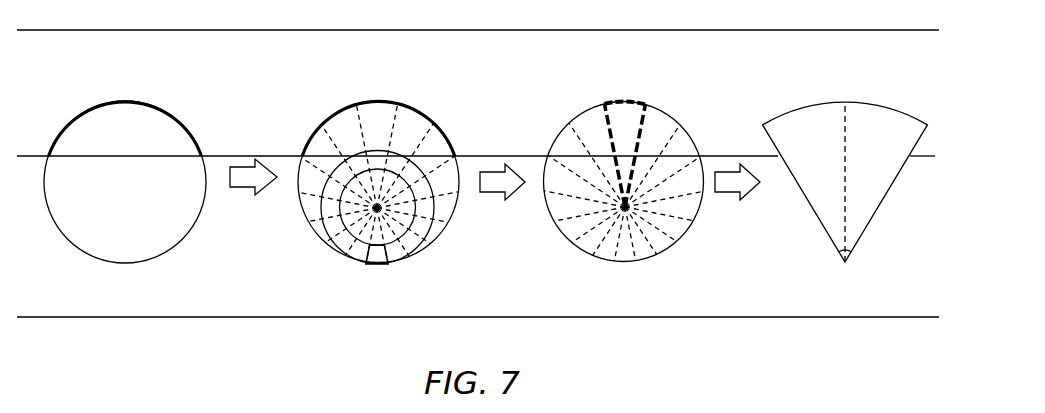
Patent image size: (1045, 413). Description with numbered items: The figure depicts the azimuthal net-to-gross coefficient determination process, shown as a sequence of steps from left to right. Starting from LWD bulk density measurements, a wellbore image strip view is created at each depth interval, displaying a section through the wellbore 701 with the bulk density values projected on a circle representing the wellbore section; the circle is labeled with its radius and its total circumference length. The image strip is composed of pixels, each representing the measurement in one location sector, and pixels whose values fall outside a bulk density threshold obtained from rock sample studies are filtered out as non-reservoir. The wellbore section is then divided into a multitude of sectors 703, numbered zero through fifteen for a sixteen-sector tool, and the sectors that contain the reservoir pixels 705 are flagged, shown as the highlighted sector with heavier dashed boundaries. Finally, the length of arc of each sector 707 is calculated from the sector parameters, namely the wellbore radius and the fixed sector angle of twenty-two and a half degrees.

The section through the wellbore 701 is at (137, 180).
The sectors 703 is at (378, 162).
The sectors that contain the reservoir pixels 705 is at (636, 156).
The length of arc of each sector 707 is at (846, 156).